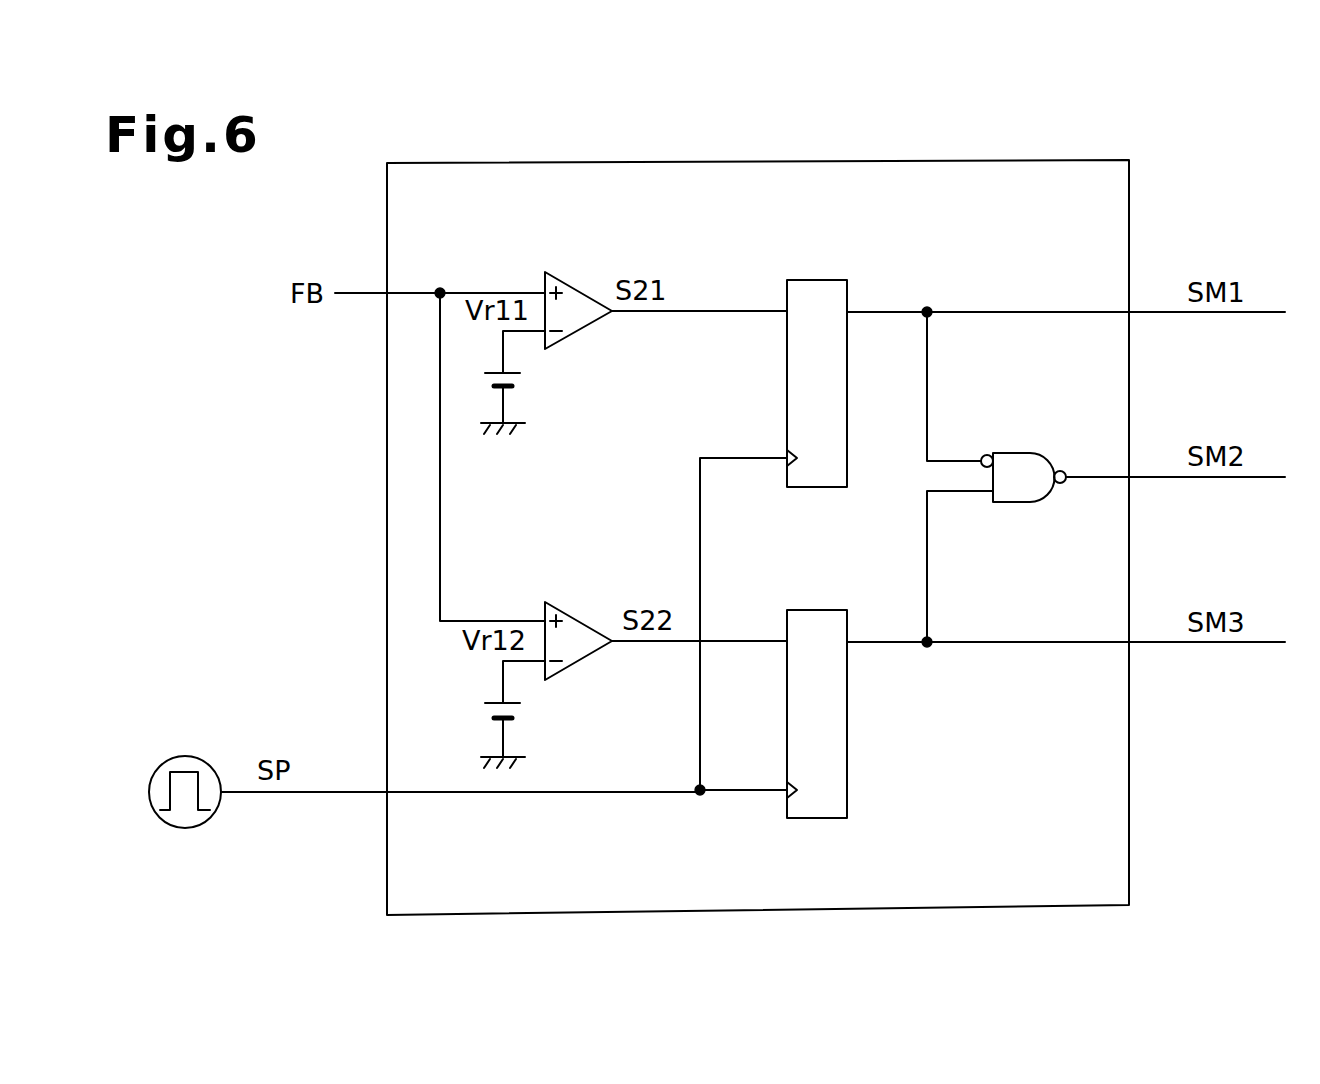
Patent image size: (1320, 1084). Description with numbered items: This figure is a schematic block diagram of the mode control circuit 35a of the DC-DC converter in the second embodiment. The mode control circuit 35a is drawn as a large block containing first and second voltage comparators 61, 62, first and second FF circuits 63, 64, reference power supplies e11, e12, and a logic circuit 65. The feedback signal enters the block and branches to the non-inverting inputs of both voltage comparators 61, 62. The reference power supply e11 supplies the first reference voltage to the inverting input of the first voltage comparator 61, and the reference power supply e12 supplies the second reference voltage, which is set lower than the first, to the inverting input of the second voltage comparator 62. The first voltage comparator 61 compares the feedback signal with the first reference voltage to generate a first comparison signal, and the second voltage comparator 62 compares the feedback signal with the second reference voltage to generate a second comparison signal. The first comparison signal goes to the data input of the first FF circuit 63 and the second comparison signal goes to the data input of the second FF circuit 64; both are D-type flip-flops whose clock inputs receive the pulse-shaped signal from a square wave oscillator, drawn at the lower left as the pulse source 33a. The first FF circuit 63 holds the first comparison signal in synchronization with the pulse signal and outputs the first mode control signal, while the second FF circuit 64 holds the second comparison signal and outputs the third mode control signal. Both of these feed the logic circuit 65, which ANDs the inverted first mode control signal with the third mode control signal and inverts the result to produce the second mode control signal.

The sampling pulse generator 33a is at (179, 755).
The mode control circuit 35a is at (1076, 160).
The first voltage comparator 61 is at (578, 286).
The second voltage comparator 62 is at (576, 606).
The first FF circuit 63 is at (814, 278).
The second FF circuit 64 is at (811, 608).
The logic circuit 65 is at (1012, 452).
The reference power supply e11 is at (512, 387).
The reference power supply e12 is at (512, 719).